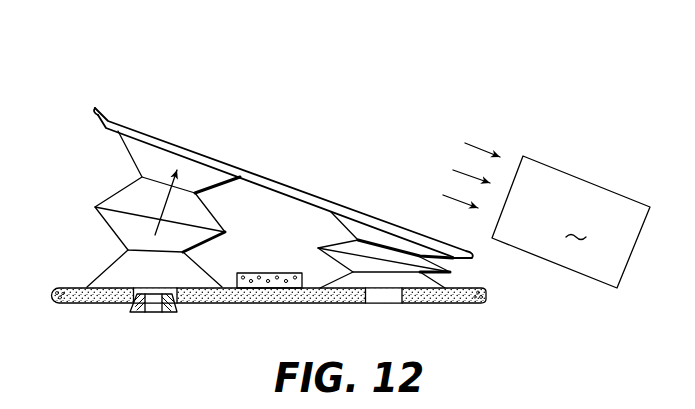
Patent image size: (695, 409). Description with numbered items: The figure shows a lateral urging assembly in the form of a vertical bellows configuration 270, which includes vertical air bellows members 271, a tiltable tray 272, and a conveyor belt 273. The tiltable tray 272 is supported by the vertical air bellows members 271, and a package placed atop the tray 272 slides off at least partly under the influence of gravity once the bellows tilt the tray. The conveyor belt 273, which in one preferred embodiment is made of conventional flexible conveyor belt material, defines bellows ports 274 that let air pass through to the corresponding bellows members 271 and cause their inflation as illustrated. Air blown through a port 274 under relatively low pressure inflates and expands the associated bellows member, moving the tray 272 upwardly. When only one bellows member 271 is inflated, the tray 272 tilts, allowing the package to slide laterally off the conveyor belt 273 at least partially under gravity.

The vertical bellows configuration 270 is at (353, 76).
The vertical air bellows member 271 is at (102, 226).
The tiltable tray 272 is at (177, 146).
The conveyor belt 273 is at (443, 304).
The bellows port 274 is at (150, 288).